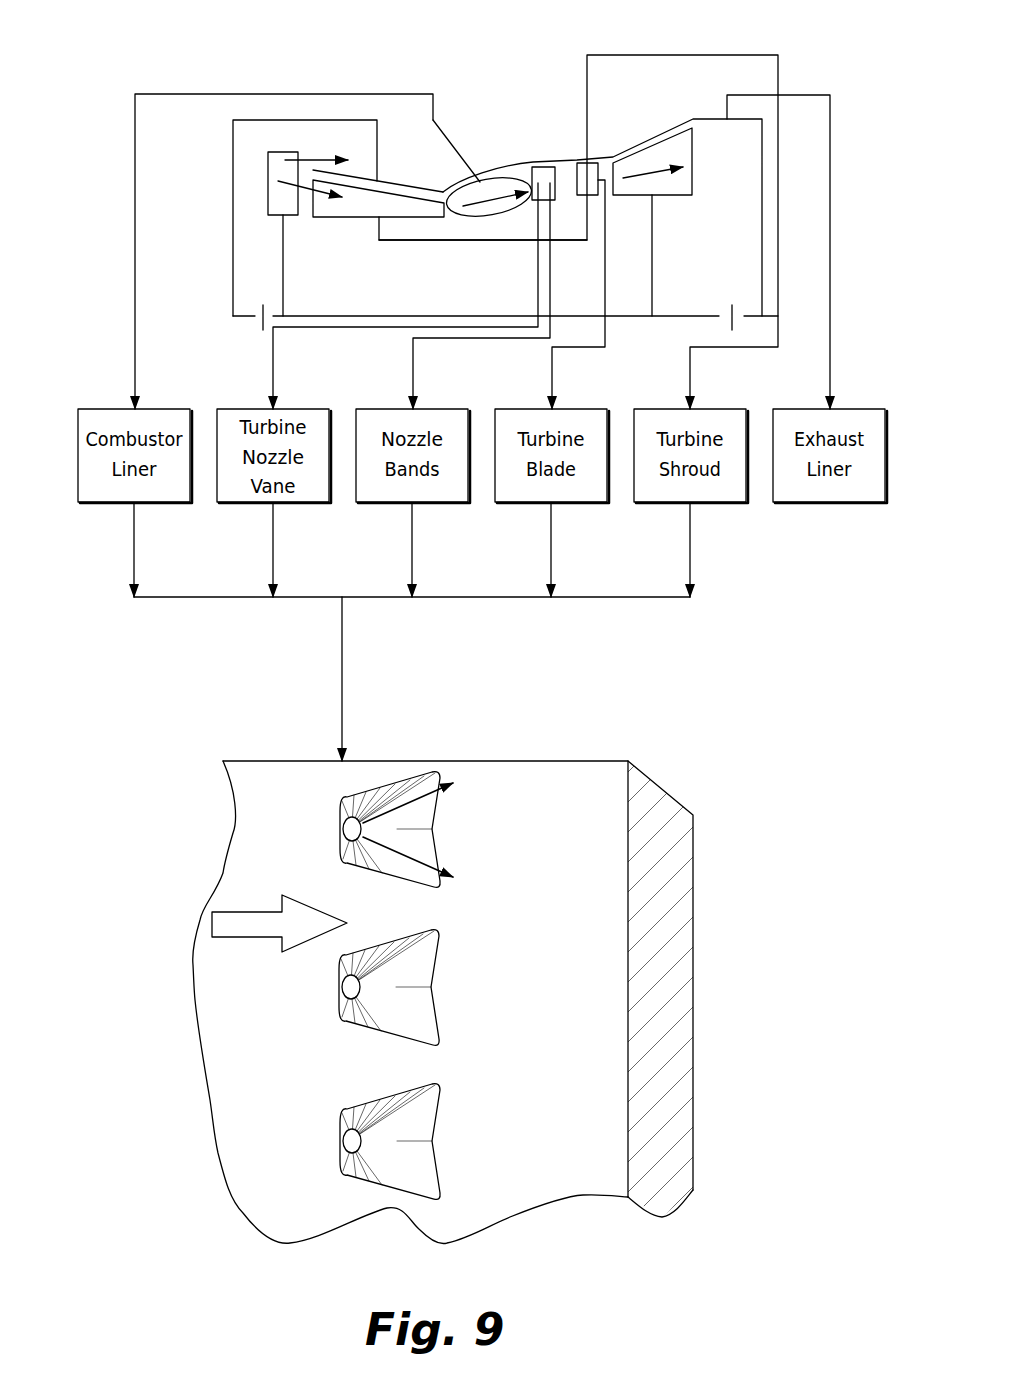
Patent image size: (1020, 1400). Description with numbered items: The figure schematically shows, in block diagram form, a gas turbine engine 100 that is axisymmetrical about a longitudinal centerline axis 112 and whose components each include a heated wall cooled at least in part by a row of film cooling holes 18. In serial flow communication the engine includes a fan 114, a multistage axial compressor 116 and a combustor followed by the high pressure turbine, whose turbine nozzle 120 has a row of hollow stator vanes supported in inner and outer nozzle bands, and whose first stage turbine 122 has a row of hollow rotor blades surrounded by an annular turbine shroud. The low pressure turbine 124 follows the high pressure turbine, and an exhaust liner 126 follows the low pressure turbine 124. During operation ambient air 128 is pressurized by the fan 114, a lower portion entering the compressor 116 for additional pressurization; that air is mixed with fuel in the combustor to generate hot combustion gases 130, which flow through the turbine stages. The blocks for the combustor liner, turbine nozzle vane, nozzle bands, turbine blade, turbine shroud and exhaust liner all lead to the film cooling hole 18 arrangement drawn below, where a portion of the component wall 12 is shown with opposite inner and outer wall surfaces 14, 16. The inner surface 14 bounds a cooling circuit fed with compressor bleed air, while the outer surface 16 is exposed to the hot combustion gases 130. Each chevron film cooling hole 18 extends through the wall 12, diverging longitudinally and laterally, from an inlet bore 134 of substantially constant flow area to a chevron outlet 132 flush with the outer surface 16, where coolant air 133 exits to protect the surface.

The gas turbine engine 100 is at (135, 119).
The longitudinal or axial centerline axis 112 is at (380, 315).
The fan 114 is at (268, 180).
The multistage axial compressor 116 is at (367, 203).
The film cooling hole 18 is at (495, 190).
The turbine nozzle 120 is at (535, 165).
The first stage turbine 122 is at (577, 163).
The low pressure turbine 124 is at (657, 196).
The exhaust liner 126 is at (708, 119).
The ambient air 128 is at (310, 157).
The hot combustion gases 130 is at (490, 215).
The component wall 12 is at (573, 761).
The inner wall surface 14 is at (693, 1000).
The outer wall surface 16 is at (552, 1004).
The chevron outlet 132 is at (365, 1020).
The coolant air 133 is at (436, 802).
The inlet bore 134 is at (340, 1000).